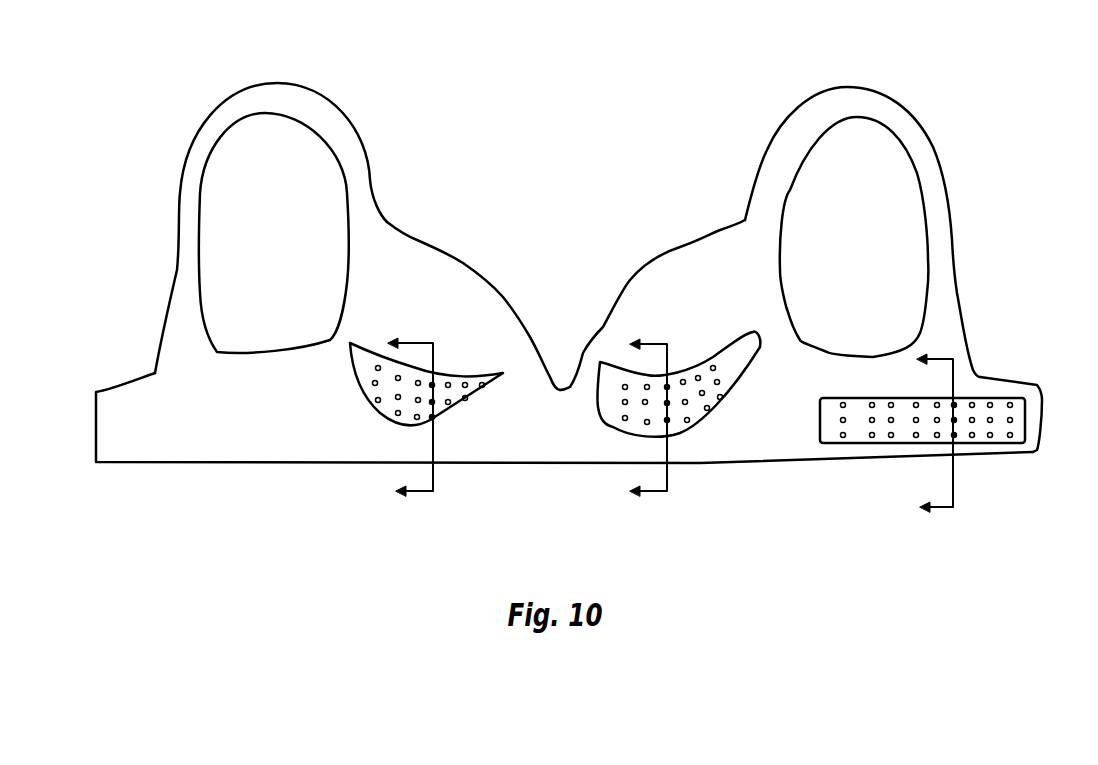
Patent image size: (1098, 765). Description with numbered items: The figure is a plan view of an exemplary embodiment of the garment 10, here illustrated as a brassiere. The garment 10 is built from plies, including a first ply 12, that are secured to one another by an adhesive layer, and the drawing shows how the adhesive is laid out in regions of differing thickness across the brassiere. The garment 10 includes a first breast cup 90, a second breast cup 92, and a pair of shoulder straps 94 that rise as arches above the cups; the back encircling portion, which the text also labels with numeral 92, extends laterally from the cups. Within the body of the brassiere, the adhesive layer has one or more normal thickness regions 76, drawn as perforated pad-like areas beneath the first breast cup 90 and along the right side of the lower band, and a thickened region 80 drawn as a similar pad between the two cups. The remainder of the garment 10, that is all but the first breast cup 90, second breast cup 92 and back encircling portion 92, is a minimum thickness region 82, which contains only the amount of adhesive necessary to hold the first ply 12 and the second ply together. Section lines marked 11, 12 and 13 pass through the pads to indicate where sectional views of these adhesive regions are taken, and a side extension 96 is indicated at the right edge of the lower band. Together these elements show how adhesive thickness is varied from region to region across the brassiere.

The garment 10 is at (573, 120).
The section line 11- 11 is at (399, 414).
The first ply 12 is at (633, 418).
The section line 13- 13 is at (920, 437).
The normal thickness region 76 is at (460, 377).
The thickened region 80 is at (713, 360).
The minimum thickness region 82 is at (203, 430).
The first breast cup 90 is at (453, 277).
The second breast cup 92 is at (673, 278).
The shoulder straps 94 is at (180, 193).
The side extension 96 is at (997, 388).